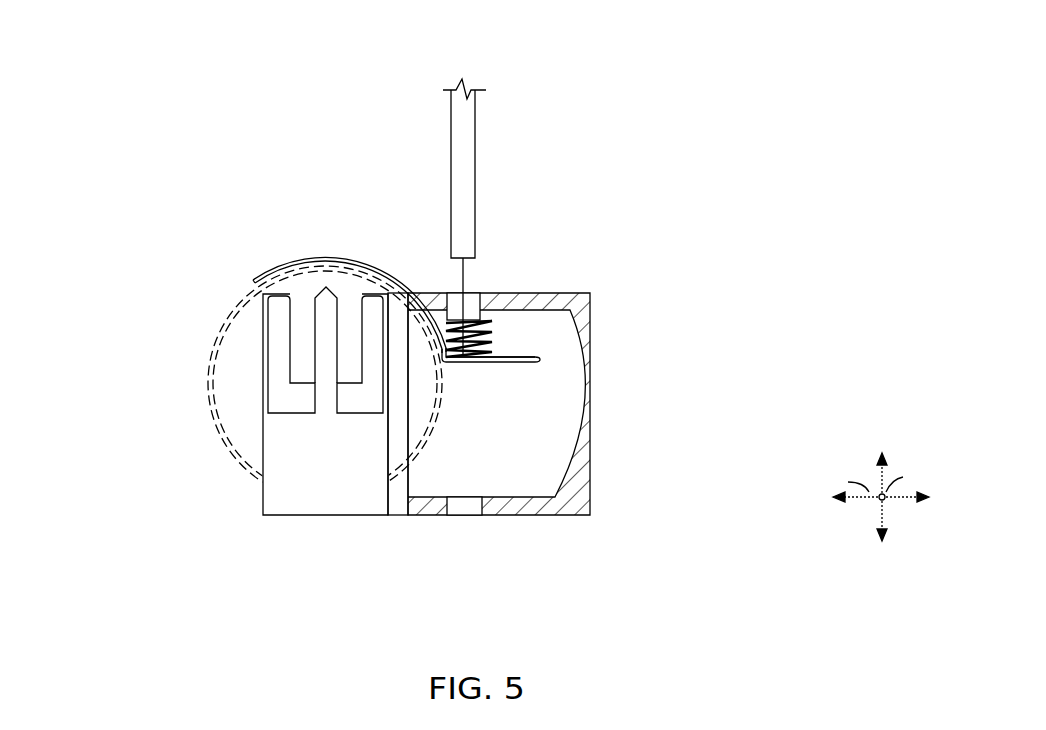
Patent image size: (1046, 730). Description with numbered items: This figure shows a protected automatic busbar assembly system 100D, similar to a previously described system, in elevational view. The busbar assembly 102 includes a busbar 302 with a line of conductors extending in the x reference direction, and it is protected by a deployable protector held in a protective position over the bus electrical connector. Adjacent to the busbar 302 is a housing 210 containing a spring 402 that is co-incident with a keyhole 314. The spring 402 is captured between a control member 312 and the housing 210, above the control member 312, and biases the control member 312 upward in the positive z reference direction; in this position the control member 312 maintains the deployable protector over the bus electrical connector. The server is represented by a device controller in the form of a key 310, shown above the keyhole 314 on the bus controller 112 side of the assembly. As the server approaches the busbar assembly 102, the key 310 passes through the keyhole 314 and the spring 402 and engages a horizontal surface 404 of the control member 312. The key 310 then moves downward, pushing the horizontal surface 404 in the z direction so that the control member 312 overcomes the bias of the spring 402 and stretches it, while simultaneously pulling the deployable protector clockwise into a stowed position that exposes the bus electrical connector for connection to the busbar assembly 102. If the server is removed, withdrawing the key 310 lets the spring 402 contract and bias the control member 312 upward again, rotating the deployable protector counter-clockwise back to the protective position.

The system 100D is at (262, 38).
The busbar assembly 102 is at (349, 521).
The busbar 302 is at (263, 493).
The bus controller 112 is at (550, 333).
The housing 210 is at (547, 507).
The keyhole 314 is at (472, 300).
The spring 402 is at (470, 323).
The control member 312 is at (522, 361).
The horizontal surface 404 is at (530, 355).
The key 310 is at (478, 170).